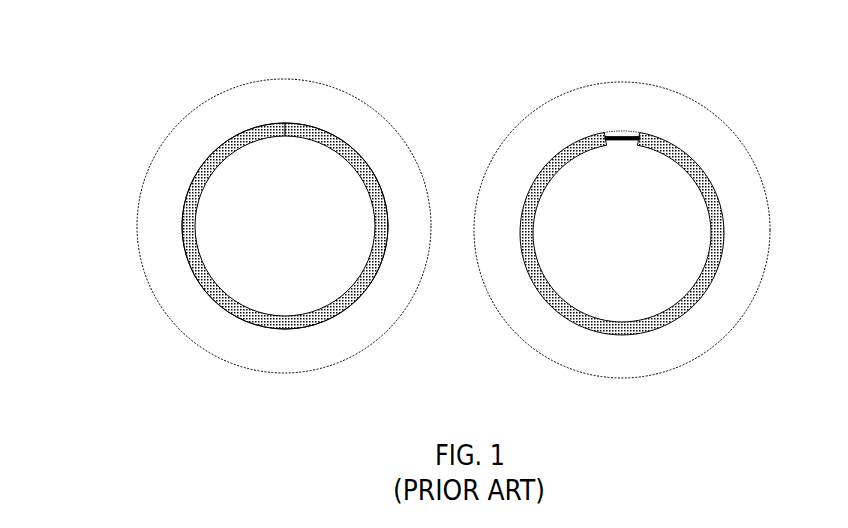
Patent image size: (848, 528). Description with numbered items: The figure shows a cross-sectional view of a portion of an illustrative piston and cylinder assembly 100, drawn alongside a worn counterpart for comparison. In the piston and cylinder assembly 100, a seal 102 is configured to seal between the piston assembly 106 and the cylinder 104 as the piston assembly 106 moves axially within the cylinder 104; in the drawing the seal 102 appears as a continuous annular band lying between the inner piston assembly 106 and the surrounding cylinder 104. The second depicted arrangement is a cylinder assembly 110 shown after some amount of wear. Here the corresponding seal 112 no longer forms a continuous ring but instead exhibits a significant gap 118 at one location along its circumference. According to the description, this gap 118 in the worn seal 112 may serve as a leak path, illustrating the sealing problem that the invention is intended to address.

The piston and cylinder assembly 100 is at (297, 38).
The seal 102 is at (183, 210).
The cylinder 104 is at (175, 167).
The piston assembly 106 is at (183, 233).
The cylinder assembly 110 is at (618, 30).
The seal 112 is at (685, 148).
The gap 118 is at (620, 132).